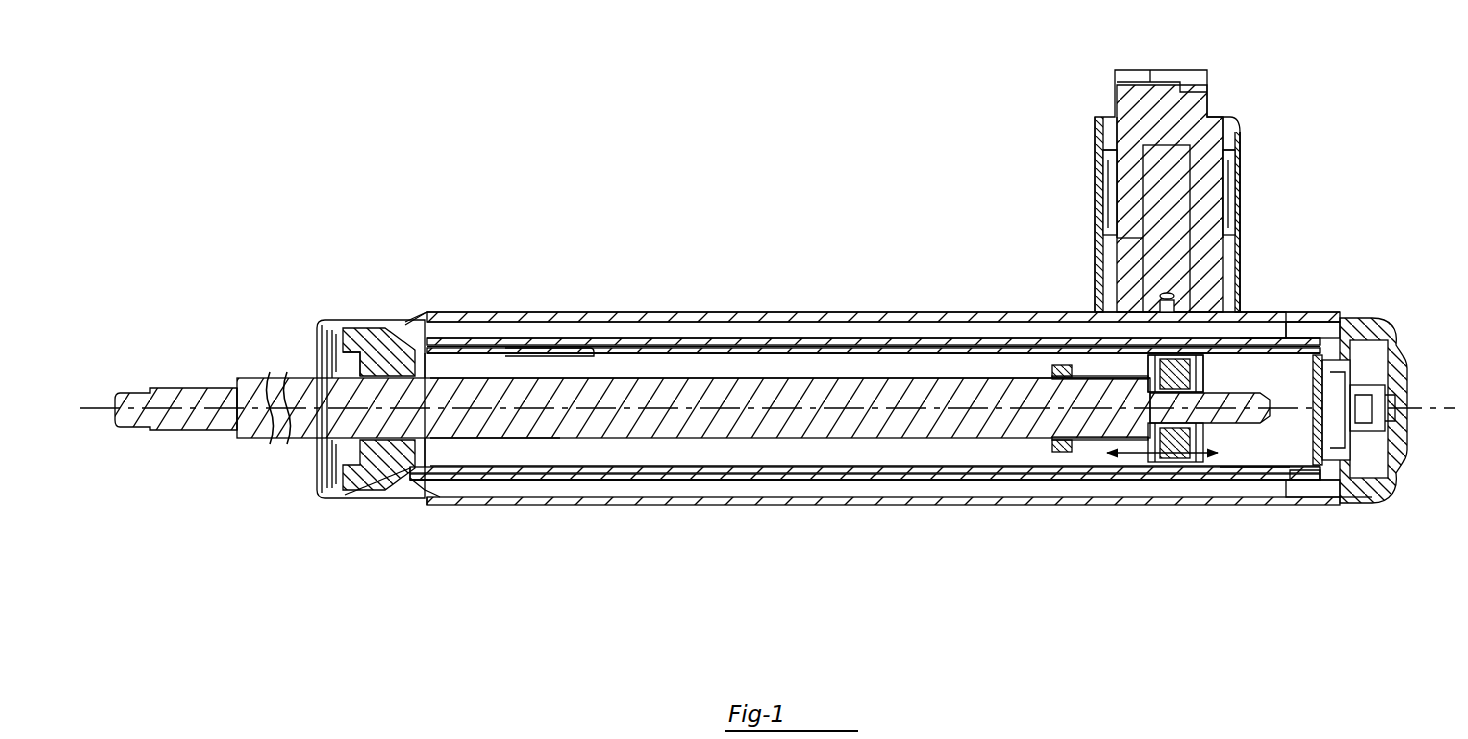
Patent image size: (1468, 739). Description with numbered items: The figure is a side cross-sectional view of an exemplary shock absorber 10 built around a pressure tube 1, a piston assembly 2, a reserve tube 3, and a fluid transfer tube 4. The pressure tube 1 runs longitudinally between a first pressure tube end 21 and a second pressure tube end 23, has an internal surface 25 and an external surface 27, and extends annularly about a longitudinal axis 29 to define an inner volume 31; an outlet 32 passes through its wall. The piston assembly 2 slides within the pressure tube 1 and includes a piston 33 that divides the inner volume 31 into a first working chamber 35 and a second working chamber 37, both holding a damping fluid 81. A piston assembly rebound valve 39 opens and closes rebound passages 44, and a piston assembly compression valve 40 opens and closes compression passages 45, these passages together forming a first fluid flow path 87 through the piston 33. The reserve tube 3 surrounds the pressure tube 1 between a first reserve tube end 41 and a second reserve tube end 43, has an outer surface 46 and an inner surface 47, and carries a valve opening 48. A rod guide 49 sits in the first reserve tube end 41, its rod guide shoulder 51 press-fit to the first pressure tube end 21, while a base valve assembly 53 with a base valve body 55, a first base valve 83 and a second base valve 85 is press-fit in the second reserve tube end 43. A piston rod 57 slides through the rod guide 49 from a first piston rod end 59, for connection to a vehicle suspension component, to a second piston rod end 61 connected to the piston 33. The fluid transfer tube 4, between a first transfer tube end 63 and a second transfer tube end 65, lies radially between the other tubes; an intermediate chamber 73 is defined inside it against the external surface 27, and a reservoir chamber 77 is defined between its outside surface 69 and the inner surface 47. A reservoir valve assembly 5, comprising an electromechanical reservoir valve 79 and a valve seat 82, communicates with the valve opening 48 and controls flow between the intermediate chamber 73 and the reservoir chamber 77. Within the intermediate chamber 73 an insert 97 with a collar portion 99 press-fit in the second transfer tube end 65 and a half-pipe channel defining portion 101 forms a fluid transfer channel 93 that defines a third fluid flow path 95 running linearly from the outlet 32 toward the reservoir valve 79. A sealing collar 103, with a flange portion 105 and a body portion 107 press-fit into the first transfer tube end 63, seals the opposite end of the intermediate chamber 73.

The pressure tube 1 is at (410, 335).
The piston assembly 2 is at (1195, 432).
The reserve tube 3 is at (760, 312).
The fluid transfer tube 4 is at (722, 333).
The reservoir valve assembly 5 is at (1257, 88).
The shock absorber 10 is at (290, 186).
The first pressure tube end 21 is at (409, 481).
The second pressure tube end 23 is at (1324, 337).
The internal surface 25 is at (640, 461).
The external surface 27 is at (1319, 479).
The longitudinal axis 29 is at (107, 414).
The inner volume 31 is at (1260, 335).
The outlet 32 is at (500, 345).
The piston 33 is at (1192, 393).
The first working chamber 35 is at (615, 375).
The second working chamber 37 is at (1240, 472).
The piston assembly rebound valve 39 is at (1199, 380).
The piston assembly compression valve 40 is at (1062, 352).
The first reserve tube end 41 is at (318, 332).
The second reserve tube end 43 is at (1374, 500).
The rebound passages 44 is at (1142, 378).
The compression passages 45 is at (1140, 350).
The outer surface 46 is at (562, 509).
The inner surface 47 is at (610, 489).
The valve opening 48 is at (1192, 300).
The rod guide 49 is at (352, 477).
The rod guide shoulder 51 is at (372, 365).
The base valve assembly 53 is at (1382, 366).
The base valve body 55 is at (1352, 326).
The piston rod 57 is at (489, 444).
The first piston rod end 59 is at (238, 440).
The second piston rod end 61 is at (1342, 421).
The first transfer tube end 63 is at (448, 482).
The second transfer tube end 65 is at (1265, 472).
The outside surface 69 is at (867, 484).
The intermediate chamber 73 is at (895, 350).
The reservoir chamber 77 is at (565, 338).
The reservoir valve 79 is at (1130, 242).
The damping fluid 81 is at (1352, 402).
The valve seat 82 is at (1160, 340).
The first base valve 83 is at (1368, 390).
The second base valve 85 is at (1282, 345).
The first fluid flow path 87 is at (1197, 472).
The fluid transfer channel 93 is at (1254, 325).
The third fluid flow path 95 is at (810, 345).
The insert 97 is at (1291, 336).
The collar portion 99 is at (1300, 472).
The channel defining portion 101 is at (965, 472).
The sealing collar 103 is at (435, 484).
The flange portion 105 is at (425, 340).
The body portion 107 is at (435, 340).